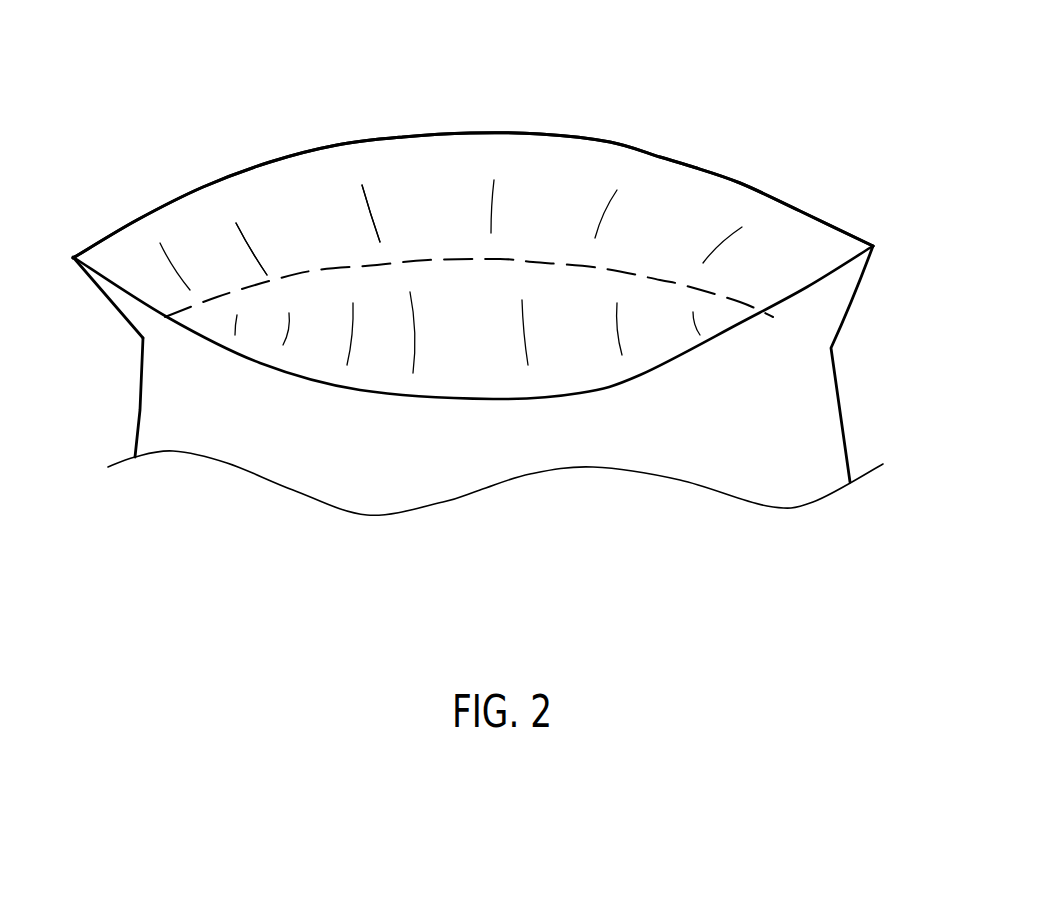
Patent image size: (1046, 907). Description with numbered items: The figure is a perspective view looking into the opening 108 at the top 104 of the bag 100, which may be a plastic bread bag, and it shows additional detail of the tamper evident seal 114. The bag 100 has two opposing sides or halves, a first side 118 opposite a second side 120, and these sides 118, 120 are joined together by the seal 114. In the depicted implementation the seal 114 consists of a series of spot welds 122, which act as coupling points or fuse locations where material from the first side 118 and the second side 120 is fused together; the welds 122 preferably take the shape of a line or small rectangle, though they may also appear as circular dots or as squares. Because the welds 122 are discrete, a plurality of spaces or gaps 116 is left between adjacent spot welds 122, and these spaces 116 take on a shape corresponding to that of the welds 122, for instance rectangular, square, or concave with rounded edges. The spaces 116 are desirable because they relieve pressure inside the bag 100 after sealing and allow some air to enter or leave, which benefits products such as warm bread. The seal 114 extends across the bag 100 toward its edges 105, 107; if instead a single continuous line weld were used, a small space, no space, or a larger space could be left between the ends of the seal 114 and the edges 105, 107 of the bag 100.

The bag 100 is at (190, 90).
The top 104 is at (140, 385).
The edge of the bag 105 is at (125, 318).
The edge of the bag 107 is at (848, 298).
The opening 108 is at (468, 117).
The tamper evident seal 114 is at (533, 262).
The spaces or gaps 116 is at (428, 260).
The first side 118 is at (332, 170).
The second side 120 is at (312, 355).
The spot welds 122 is at (368, 265).